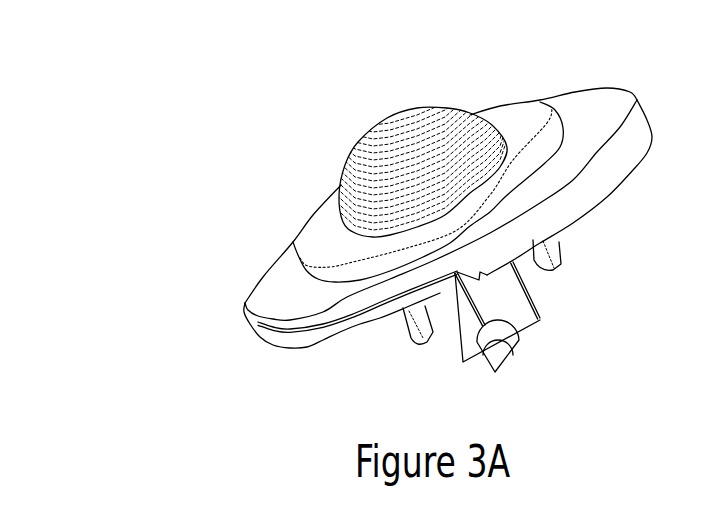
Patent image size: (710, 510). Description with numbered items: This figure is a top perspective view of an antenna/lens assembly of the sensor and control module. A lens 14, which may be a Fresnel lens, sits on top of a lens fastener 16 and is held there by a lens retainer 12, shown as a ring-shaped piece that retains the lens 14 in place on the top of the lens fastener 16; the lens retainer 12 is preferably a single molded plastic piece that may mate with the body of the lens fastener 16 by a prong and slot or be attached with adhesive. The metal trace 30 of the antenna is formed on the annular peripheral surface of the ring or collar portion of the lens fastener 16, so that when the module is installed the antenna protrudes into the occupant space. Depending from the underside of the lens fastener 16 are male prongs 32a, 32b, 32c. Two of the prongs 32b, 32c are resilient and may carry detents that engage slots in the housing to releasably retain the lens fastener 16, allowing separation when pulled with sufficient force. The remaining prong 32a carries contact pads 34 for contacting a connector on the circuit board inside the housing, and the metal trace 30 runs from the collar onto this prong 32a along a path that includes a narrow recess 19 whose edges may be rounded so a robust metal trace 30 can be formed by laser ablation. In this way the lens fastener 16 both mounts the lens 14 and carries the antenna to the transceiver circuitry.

The lens retainer 12 is at (318, 210).
The lens 14 is at (359, 145).
The lens fastener 16 is at (632, 176).
The narrow recess 19 is at (456, 282).
The metal trace 30 is at (340, 327).
The male prong 32a is at (540, 310).
The male prong 32b is at (560, 253).
The male prong 32c is at (406, 335).
The contact pads 34 is at (495, 373).